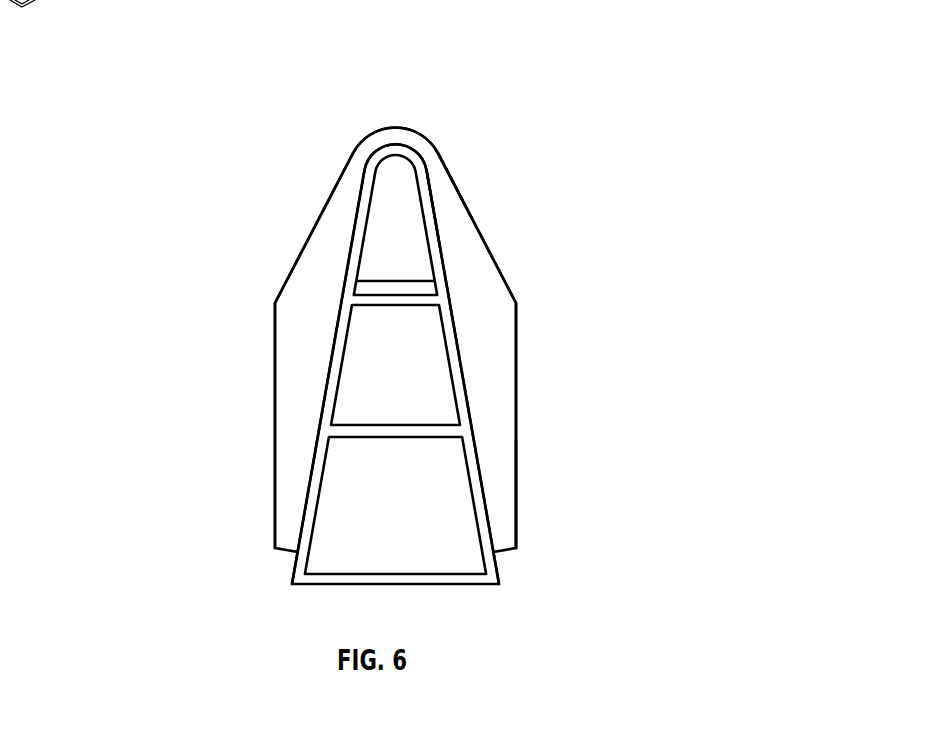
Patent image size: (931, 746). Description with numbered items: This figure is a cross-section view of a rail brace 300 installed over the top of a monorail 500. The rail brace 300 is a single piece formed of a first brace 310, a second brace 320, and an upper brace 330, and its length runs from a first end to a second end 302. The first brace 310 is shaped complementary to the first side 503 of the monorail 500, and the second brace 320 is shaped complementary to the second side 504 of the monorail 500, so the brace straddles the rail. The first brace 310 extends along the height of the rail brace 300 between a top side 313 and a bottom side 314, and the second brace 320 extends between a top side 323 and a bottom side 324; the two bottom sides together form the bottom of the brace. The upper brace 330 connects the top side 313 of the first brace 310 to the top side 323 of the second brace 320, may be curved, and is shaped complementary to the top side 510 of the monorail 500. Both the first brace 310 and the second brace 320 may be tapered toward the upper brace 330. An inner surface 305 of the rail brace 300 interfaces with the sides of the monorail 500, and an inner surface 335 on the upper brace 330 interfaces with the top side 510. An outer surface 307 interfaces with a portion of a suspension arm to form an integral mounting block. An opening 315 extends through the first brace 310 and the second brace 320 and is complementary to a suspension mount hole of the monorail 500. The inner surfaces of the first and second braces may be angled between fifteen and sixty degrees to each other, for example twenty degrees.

The rail brace 300 is at (709, 46).
The second end 302 is at (72, 0).
The inner surface 305 is at (482, 472).
The outer surface 307 is at (517, 528).
The first brace 310 is at (308, 322).
The top side 313 is at (353, 155).
The bottom side 314 is at (282, 552).
The opening 315 is at (273, 400).
The second brace 320 is at (488, 278).
The top side 323 is at (436, 148).
The bottom side 324 is at (512, 552).
The upper brace 330 is at (395, 143).
The inner surface 335 is at (386, 143).
The monorail 500 is at (317, 448).
The first side 503 is at (352, 237).
The second side 504 is at (433, 212).
The top side 510 is at (412, 143).